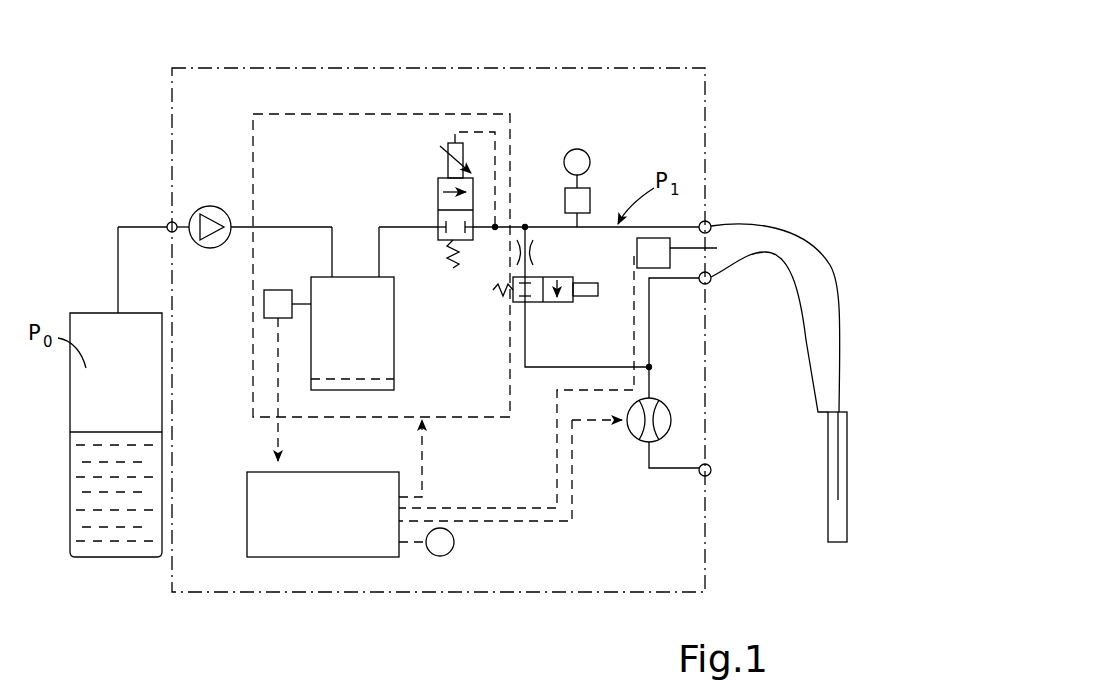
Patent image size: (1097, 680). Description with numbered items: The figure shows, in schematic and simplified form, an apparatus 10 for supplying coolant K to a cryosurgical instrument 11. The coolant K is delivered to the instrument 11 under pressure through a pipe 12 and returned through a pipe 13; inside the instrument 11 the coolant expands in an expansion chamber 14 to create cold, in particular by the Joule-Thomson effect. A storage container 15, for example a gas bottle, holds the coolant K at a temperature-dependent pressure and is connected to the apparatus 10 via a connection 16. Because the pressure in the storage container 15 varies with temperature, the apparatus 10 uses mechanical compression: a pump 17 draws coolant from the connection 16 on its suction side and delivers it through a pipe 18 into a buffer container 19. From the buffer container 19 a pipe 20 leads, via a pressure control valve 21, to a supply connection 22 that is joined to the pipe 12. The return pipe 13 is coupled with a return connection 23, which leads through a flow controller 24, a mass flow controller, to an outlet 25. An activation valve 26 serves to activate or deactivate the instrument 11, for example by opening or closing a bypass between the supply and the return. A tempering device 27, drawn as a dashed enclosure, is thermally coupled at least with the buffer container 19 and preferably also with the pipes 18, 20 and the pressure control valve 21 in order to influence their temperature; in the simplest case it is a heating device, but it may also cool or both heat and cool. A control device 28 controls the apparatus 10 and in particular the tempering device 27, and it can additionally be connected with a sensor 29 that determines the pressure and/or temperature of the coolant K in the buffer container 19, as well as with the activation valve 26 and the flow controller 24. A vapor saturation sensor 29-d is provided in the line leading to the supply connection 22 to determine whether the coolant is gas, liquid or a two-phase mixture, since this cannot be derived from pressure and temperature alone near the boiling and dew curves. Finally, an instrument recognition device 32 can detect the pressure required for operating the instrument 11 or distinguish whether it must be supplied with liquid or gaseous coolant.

The apparatus 10 is at (731, 110).
The cryosurgical instrument 11 is at (806, 500).
The pipe 12 is at (814, 241).
The pipe 13 is at (790, 284).
The expansion chamber 14 is at (848, 517).
The storage container 15 is at (67, 283).
The connection 16 is at (161, 214).
The pump 17 is at (212, 201).
The pipe 18 is at (288, 228).
The buffer container 19 is at (394, 328).
The pipe 20 is at (397, 227).
The pressure control valve 21 is at (430, 167).
The supply connection 22 is at (712, 222).
The return connection 23 is at (708, 283).
The flow controller 24 is at (639, 447).
The outlet 25 is at (710, 465).
The activation valve 26 is at (559, 312).
The tempering device 27 is at (513, 147).
The control device 28 is at (350, 524).
The sensor 29 is at (271, 290).
The vapor saturation sensor 29-d is at (592, 192).
The instrument recognition device 32 is at (637, 253).